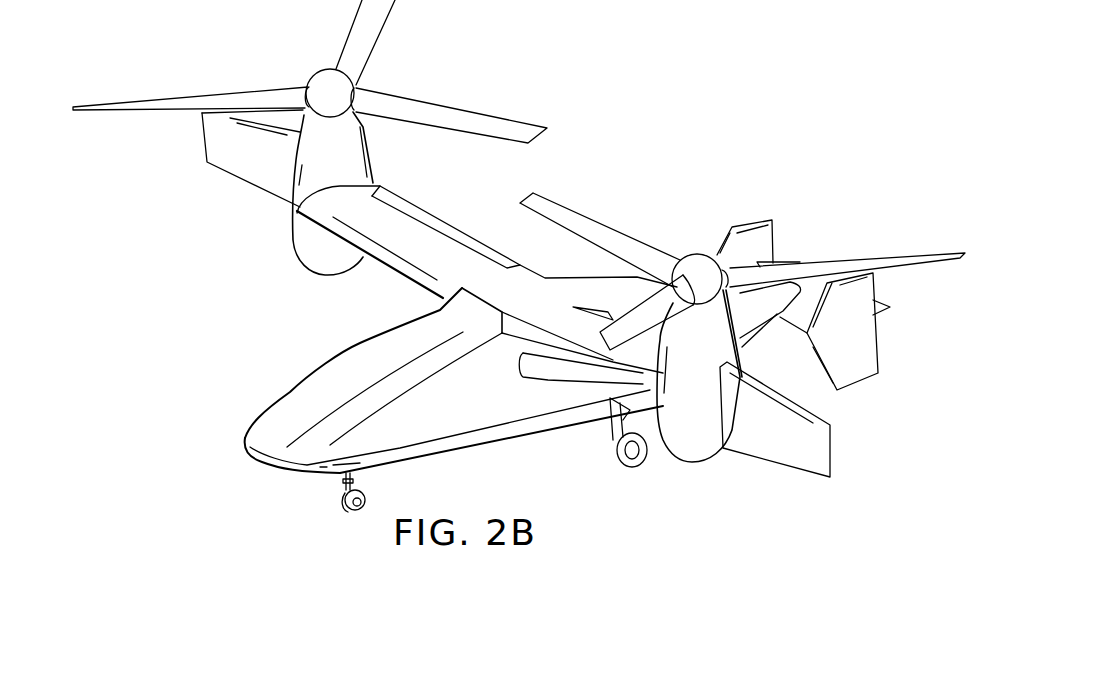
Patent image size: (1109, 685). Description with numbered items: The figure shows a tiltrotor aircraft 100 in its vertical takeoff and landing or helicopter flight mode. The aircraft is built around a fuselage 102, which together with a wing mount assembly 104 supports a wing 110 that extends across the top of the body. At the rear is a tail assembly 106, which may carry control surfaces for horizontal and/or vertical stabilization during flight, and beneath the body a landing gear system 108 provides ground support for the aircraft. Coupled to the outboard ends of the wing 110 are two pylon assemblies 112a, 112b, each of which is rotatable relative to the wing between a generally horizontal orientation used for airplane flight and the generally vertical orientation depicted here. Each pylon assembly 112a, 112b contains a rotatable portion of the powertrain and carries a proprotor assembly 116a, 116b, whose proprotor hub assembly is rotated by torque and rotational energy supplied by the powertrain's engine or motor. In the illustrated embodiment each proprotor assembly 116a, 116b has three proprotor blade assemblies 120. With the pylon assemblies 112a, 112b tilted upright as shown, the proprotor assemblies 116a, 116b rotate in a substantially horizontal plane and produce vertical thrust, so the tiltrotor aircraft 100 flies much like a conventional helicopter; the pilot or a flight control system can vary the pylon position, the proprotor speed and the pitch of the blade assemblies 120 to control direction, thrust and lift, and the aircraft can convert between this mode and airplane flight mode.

The tiltrotor aircraft 100 is at (670, 124).
The fuselage 102 is at (288, 390).
The wing mount assembly 104 is at (453, 313).
The tail assembly 106 is at (753, 218).
The landing gear system 108 is at (353, 513).
The wing 110 is at (420, 233).
The pylon assembly 112a is at (707, 457).
The pylon assembly 112b is at (318, 278).
The proprotor assembly 116a is at (697, 253).
The proprotor assembly 116b is at (327, 67).
The proprotor blade assemblies 120 is at (110, 100).